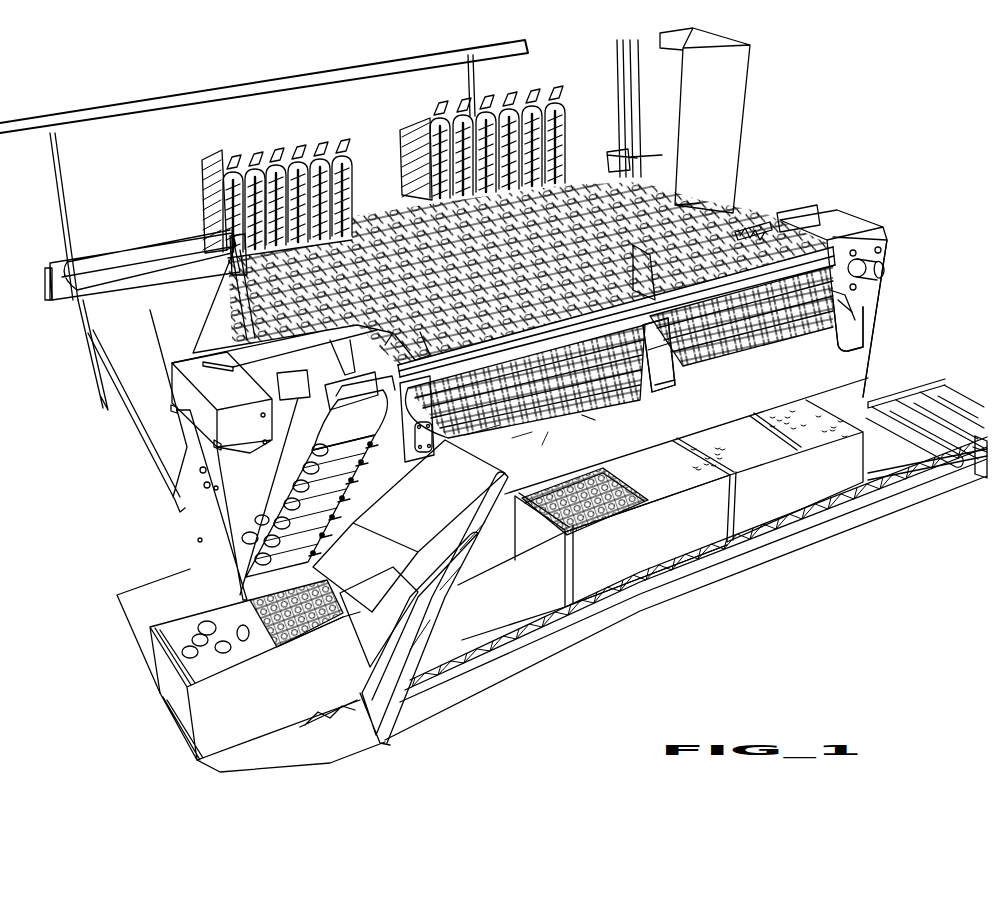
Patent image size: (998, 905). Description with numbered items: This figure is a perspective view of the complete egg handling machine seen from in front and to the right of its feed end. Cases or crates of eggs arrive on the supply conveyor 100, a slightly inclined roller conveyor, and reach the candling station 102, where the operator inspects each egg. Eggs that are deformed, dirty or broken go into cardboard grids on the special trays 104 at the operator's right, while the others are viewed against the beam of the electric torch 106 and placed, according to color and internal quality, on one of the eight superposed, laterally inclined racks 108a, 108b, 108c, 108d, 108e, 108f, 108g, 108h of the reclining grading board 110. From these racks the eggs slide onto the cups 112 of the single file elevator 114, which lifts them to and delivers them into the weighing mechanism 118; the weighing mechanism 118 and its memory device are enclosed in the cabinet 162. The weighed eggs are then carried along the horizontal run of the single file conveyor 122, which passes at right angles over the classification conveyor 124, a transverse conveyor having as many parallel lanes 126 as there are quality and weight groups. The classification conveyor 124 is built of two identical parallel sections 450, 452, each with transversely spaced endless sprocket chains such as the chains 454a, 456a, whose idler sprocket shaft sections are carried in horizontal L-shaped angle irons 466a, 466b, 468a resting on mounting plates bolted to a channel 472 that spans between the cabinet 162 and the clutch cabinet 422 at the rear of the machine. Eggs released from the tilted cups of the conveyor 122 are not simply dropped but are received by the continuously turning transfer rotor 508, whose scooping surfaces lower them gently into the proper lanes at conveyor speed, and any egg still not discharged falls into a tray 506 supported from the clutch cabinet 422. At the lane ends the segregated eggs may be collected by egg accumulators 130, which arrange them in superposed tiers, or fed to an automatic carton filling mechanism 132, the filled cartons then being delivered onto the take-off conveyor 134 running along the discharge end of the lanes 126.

The supply conveyor 100 is at (790, 545).
The candling station 102 is at (212, 508).
The special trays 104 is at (440, 521).
The electric torch 106 is at (258, 580).
The rack or shelf of the grading board 108a is at (283, 645).
The rack or shelf of the grading board 108b is at (393, 580).
The rack or shelf of the grading board 108c is at (318, 543).
The rack or shelf of the grading board 108d is at (325, 528).
The rack or shelf of the grading board 108e is at (340, 504).
The rack or shelf of the grading board 108f is at (348, 490).
The rack or shelf of the grading board 108g is at (356, 470).
The rack or shelf of the grading board 108h is at (366, 452).
The reclining grading board 110 is at (346, 505).
The cups of the single file elevator 112 is at (310, 470).
The single file elevator 114 is at (242, 537).
The weighing mechanism 118 is at (334, 375).
The single file conveyor 122 is at (862, 232).
The classification conveyor 124 is at (545, 432).
The classification lanes 126 is at (465, 437).
The egg accumulators 130 is at (328, 135).
The automatic carton filling mechanism 132 is at (595, 167).
The take-off conveyor 134 is at (178, 259).
The cabinet 162 is at (196, 442).
The clutch cabinet 422 is at (884, 230).
The section of the classification conveyor 450 is at (838, 296).
The section of the classification conveyor 452 is at (590, 418).
The endless sprocket chain 454a is at (855, 312).
The endless sprocket chain 456a is at (665, 395).
The L-shaped angle iron 466a is at (852, 350).
The L-shaped angle iron 466b is at (680, 400).
The L-shaped angle iron 468a is at (745, 450).
The channel 472 is at (542, 445).
The tray 506 is at (777, 220).
The transfer rotor 508 is at (757, 230).